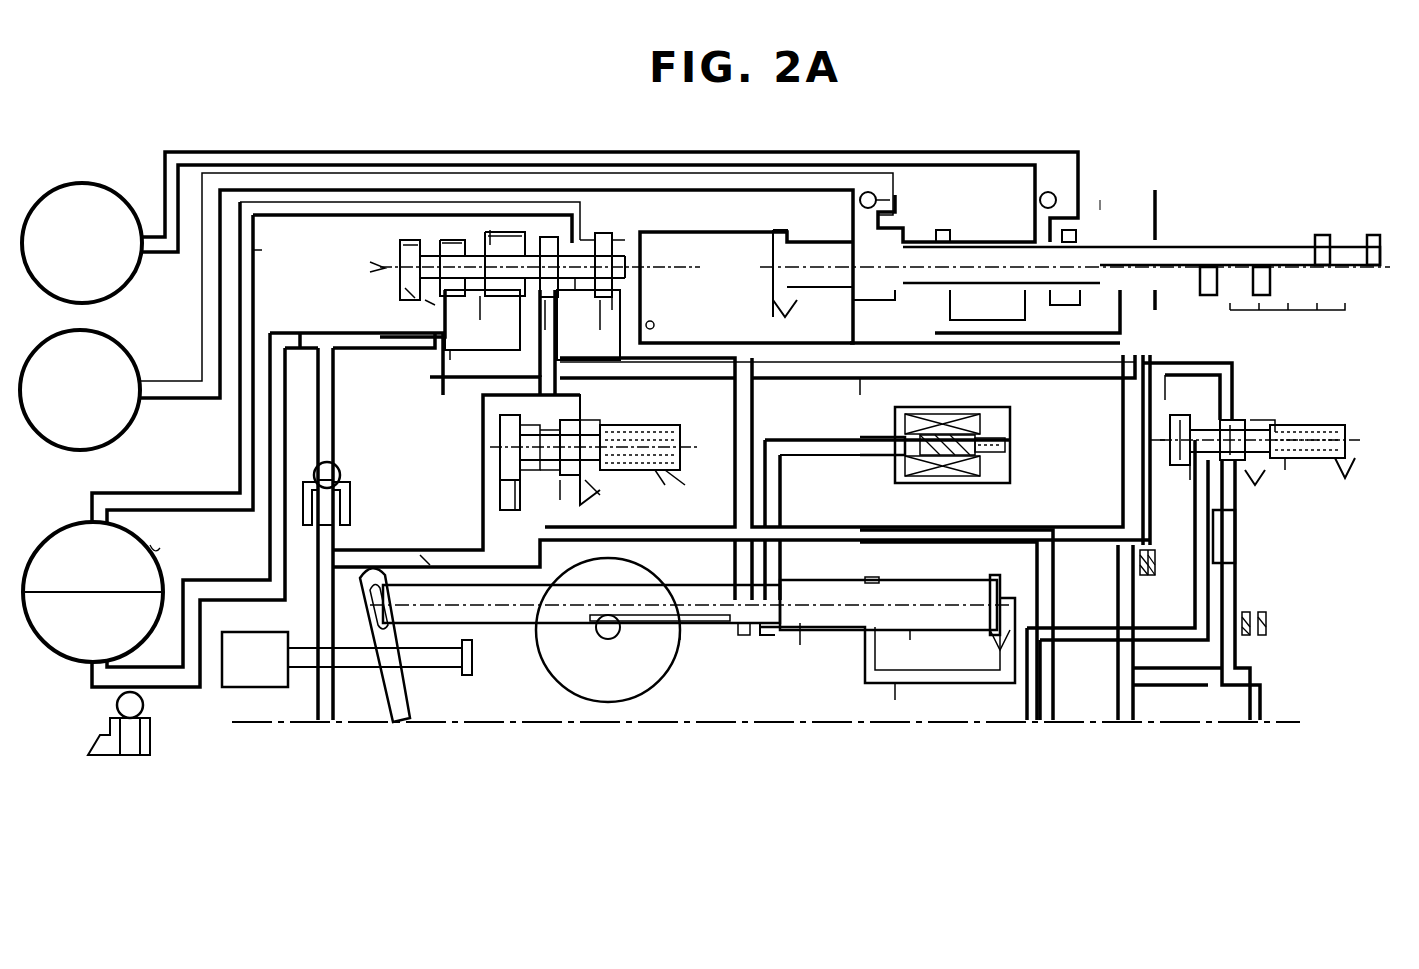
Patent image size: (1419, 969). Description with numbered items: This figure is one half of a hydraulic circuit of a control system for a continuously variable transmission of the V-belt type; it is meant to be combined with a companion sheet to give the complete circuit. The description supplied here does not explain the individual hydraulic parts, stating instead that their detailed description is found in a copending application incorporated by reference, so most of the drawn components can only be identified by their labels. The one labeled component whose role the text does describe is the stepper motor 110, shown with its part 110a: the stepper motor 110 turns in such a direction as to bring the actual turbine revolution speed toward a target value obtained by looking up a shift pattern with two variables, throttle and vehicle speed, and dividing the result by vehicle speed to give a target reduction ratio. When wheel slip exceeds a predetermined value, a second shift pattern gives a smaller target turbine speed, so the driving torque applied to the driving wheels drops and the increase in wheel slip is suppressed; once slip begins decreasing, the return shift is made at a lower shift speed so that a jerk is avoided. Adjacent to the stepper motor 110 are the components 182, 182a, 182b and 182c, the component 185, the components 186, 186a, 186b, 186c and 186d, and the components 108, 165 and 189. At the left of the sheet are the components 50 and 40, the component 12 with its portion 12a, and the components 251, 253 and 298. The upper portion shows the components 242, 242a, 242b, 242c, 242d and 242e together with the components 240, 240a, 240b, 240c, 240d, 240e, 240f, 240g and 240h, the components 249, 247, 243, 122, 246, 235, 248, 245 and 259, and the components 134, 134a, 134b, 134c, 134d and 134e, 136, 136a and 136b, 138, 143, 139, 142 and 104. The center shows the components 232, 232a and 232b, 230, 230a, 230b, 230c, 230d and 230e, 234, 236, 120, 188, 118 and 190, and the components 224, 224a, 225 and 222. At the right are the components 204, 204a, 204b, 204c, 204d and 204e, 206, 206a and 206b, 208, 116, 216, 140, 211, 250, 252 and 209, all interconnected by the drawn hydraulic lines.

The reverse brake 50 is at (130, 200).
The forward clutch 40 is at (128, 341).
The fluid coupling 12 is at (58, 655).
The lock-up chamber 12a is at (155, 545).
The check valve 251 is at (143, 702).
The check valve 253 is at (340, 468).
The actuator 298 is at (250, 632).
The spool valve 242 is at (395, 283).
The valve body 240 is at (640, 240).
The valve land 242a is at (408, 262).
The valve land 242b is at (478, 256).
The valve land 242c is at (548, 222).
The valve land 242d is at (575, 243).
The valve land 242e is at (630, 258).
The port 240a is at (405, 296).
The port 240b is at (430, 302).
The port 240c is at (482, 320).
The port 240d is at (480, 310).
The port 240e is at (545, 320).
The port 240f is at (612, 285).
The port 240g is at (600, 320).
The port 240h is at (640, 305).
The orifice 249 is at (655, 325).
The passage 247 is at (490, 232).
The passage 243 is at (253, 255).
The passage 122 is at (370, 262).
The passage 246 is at (445, 340).
The chamber 235 is at (548, 325).
The passage 248 is at (560, 360).
The passage 245 is at (272, 418).
The passage 259 is at (445, 560).
The spool 232 is at (520, 462).
The valve body 230 is at (670, 420).
The spring 234 is at (670, 445).
The chamber 236 is at (520, 425).
The land 232a is at (540, 432).
The land 232b is at (600, 425).
The port 230a is at (540, 472).
The port 230b is at (560, 485).
The port 230c is at (560, 490).
The port 230d is at (597, 470).
The port 230e is at (680, 470).
The passage 120 is at (660, 480).
The passage 188 is at (755, 410).
The passage 118 is at (892, 420).
The passage 190 is at (782, 495).
The port 134c is at (890, 362).
The solenoid 224 is at (990, 407).
The solenoid coil 224a is at (928, 435).
The spring 225 is at (1005, 445).
The plunger 222 is at (905, 470).
The manual valve 134 is at (1155, 240).
The manual valve spool 136 is at (1255, 250).
The land 136a is at (955, 242).
The land 136b is at (1105, 228).
The port 134a is at (800, 320).
The port 134b is at (905, 298).
The port 134d is at (1040, 300).
The port 134e is at (1095, 305).
The chamber 138 is at (995, 168).
The orifice 143 is at (893, 200).
The orifice 139 is at (1055, 195).
The passage 142 is at (735, 185).
The manual valve assembly 104 is at (1117, 199).
The valve body 204 is at (1320, 425).
The spring 208 is at (1345, 448).
The spool 206 is at (1340, 420).
The land 206a is at (1190, 428).
The land 206b is at (1235, 430).
The port 204a is at (1165, 450).
The port 204b is at (1190, 478).
The port 204c is at (1225, 478).
The port 204d is at (1258, 478).
The port 204e is at (1347, 472).
The passage 116 is at (1288, 465).
The passage 216 is at (1150, 442).
The passage 140 is at (1135, 503).
The orifice 211 is at (1232, 540).
The orifice 250 is at (1137, 565).
The orifice 252 is at (1266, 625).
The passage 209 is at (1088, 365).
The piston 182 is at (503, 617).
The lever 185 is at (385, 605).
The stepper motor 110 is at (540, 688).
The cam shaft 110a is at (616, 635).
The piston land 182a is at (740, 635).
The piston land 182b is at (912, 633).
The piston rack 182c is at (683, 640).
The passage 165 is at (875, 545).
The cylinder 186 is at (937, 585).
The port 186a is at (750, 635).
The port 186b is at (780, 630).
The chamber 186c is at (873, 630).
The port 186d is at (995, 640).
The servo 108 is at (831, 630).
The passage 189 is at (895, 690).